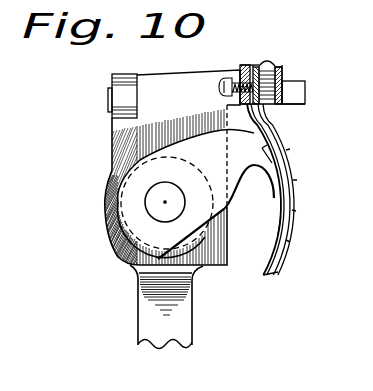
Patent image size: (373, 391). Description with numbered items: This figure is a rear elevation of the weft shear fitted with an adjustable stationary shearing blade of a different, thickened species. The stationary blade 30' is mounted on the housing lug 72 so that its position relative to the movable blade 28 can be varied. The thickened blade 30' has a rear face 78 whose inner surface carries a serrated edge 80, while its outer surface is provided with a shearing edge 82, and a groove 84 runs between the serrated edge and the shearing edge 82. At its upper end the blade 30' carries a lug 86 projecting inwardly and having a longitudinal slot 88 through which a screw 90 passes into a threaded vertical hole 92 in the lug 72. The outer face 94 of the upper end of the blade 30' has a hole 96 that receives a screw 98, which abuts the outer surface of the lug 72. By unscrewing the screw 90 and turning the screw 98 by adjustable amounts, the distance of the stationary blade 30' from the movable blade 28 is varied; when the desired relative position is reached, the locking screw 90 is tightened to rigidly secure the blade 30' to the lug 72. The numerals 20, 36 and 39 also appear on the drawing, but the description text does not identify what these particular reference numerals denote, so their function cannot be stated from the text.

The housing 20 is at (102, 147).
The movable blade 28 is at (270, 170).
The thickened blade 30' is at (234, 193).
The shaft 36 is at (157, 201).
The stem 39 is at (150, 318).
The lug 72 is at (294, 89).
The rear face 78 is at (285, 258).
The serrated edge 80 is at (294, 186).
The shearing edge 82 is at (286, 221).
The groove 84 is at (293, 227).
The lug 86 is at (284, 73).
The longitudinal slot 88 is at (263, 62).
The screw 90 is at (283, 63).
The threaded vertical hole 92 is at (268, 105).
The outer face 94 is at (239, 73).
The hole 96 is at (249, 67).
The screw 98 is at (218, 88).